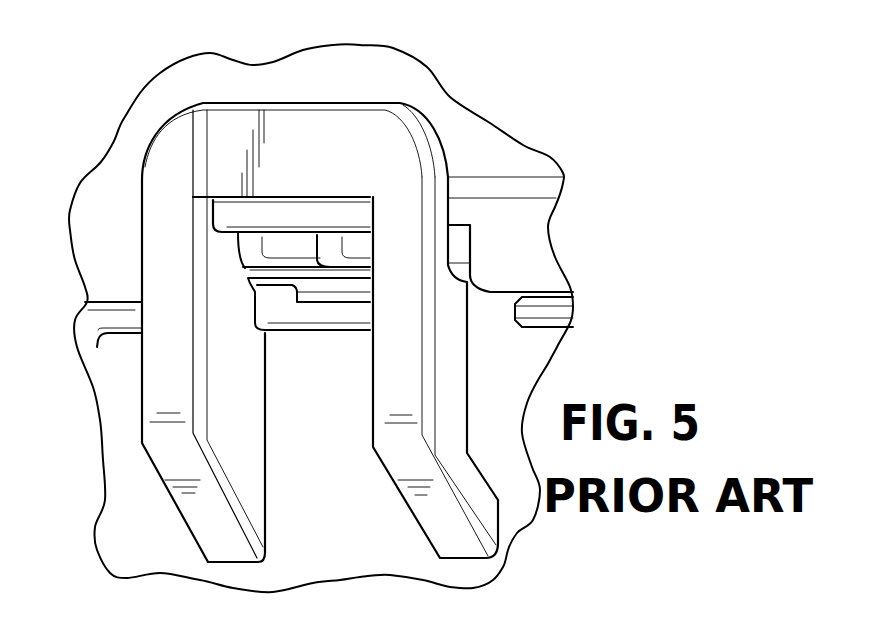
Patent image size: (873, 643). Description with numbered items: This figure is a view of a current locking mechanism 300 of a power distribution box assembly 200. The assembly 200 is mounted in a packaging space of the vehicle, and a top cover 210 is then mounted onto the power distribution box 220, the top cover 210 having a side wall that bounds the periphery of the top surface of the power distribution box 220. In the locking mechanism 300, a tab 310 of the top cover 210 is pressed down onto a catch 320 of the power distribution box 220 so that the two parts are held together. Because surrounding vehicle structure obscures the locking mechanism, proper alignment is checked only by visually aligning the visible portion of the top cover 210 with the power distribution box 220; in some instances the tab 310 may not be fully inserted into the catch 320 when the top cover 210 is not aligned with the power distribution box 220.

The locking mechanism 300 is at (392, 299).
The catch 320 is at (397, 102).
The tab 310 is at (227, 215).
The power distribution box assembly 200 is at (571, 249).
The top cover 210 is at (540, 165).
The power distribution box 220 is at (570, 360).